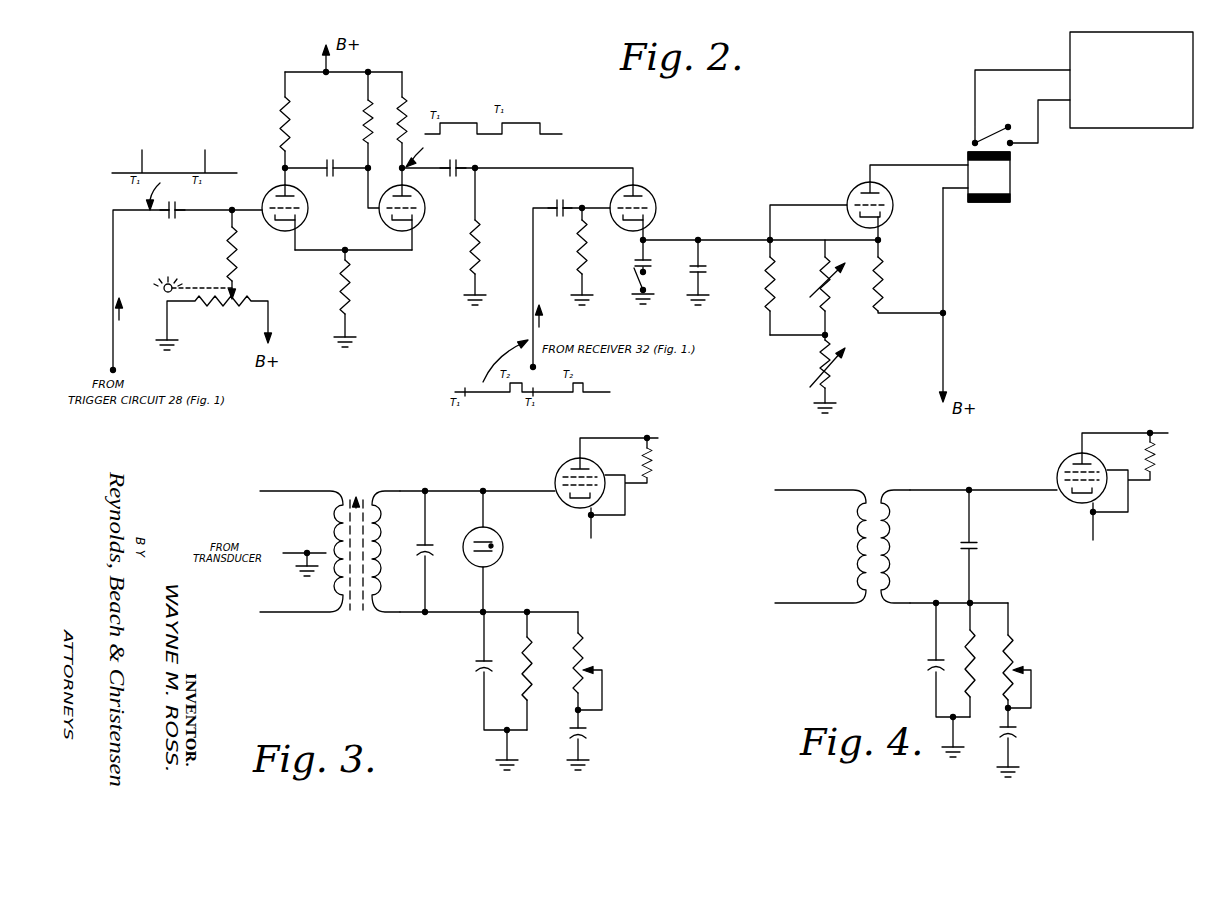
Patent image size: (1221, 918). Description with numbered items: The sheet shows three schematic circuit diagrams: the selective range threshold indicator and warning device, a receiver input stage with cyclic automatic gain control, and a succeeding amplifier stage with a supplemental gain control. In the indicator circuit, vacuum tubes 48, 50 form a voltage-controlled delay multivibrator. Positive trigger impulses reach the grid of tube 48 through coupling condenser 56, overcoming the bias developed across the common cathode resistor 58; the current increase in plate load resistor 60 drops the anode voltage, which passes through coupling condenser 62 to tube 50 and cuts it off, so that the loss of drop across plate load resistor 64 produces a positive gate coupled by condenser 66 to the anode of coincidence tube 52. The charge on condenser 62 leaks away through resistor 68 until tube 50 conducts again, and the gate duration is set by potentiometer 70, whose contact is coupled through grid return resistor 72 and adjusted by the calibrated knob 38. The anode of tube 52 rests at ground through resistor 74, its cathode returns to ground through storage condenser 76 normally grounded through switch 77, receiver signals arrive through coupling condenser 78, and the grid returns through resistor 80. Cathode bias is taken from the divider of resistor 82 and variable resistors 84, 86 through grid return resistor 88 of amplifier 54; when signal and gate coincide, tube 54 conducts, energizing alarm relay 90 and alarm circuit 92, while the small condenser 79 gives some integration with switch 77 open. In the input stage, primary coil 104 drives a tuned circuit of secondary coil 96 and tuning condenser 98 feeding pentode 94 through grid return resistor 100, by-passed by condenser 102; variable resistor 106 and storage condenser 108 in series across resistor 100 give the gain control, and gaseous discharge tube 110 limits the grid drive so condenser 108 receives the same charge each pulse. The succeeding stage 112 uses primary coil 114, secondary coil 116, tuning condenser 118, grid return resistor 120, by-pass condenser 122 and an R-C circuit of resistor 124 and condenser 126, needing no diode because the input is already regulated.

In FIG. 2, the calibrated adjusting element 38 is at (165, 291).
In FIG. 2, the vacuum tube 48 is at (305, 226).
In FIG. 2, the vacuum tube 50 is at (424, 210).
In FIG. 2, the time-coincidence amplifier tube 52 is at (652, 193).
In FIG. 2, the alarm actuating amplifier tube 54 is at (855, 188).
In FIG. 2, the coupling condenser 56 is at (180, 218).
In FIG. 2, the resistor 58 is at (352, 286).
In FIG. 2, the plate load resistor 60 is at (291, 123).
In FIG. 2, the coupling condenser 62 is at (333, 176).
In FIG. 2, the plate load resistor 64 is at (405, 108).
In FIG. 2, the coupling condenser 66 is at (458, 165).
In FIG. 2, the resistor 68 is at (362, 130).
In FIG. 2, the potentiometer 70 is at (245, 292).
In FIG. 2, the grid return resistor 72 is at (240, 258).
In FIG. 2, the resistor 74 is at (480, 248).
In FIG. 2, the storage condenser 76 is at (654, 262).
In FIG. 2, the switch 77 is at (636, 290).
In FIG. 2, the coupling condenser 78 is at (553, 203).
In FIG. 2, the condenser 79 is at (706, 268).
In FIG. 2, the resistor 80 is at (588, 248).
In FIG. 2, the resistor 82 is at (885, 282).
In FIG. 2, the variable resistor 84 is at (833, 290).
In FIG. 2, the variable resistor 86 is at (835, 372).
In FIG. 2, the grid return resistor 88 is at (765, 288).
In FIG. 2, the alarm relay 90 is at (987, 205).
In FIG. 2, the alarm circuit 92 is at (1093, 130).
In FIG. 3, the pentode amplifier tube 94 is at (565, 463).
In FIG. 3, the secondary inductance coil 96 is at (383, 530).
In FIG. 3, the tuning condenser 98 is at (428, 543).
In FIG. 3, the grid return resistor 100 is at (532, 660).
In FIG. 3, the by-pass condenser 102 is at (480, 680).
In FIG. 3, the primary coil 104 is at (333, 492).
In FIG. 3, the variable resistor 106 is at (588, 660).
In FIG. 3, the storage condenser 108 is at (590, 737).
In FIG. 3, the gaseous discharge tube 110 is at (505, 549).
In FIG. 4, the amplifier stage 112 is at (1065, 458).
In FIG. 4, the primary coil 114 is at (850, 545).
In FIG. 4, the secondary coil 116 is at (898, 545).
In FIG. 4, the tuning condenser 118 is at (978, 546).
In FIG. 4, the grid return resistor 120 is at (975, 650).
In FIG. 4, the by-pass condenser 122 is at (928, 670).
In FIG. 4, the resistor 124 is at (1015, 662).
In FIG. 4, the condenser 126 is at (1018, 735).